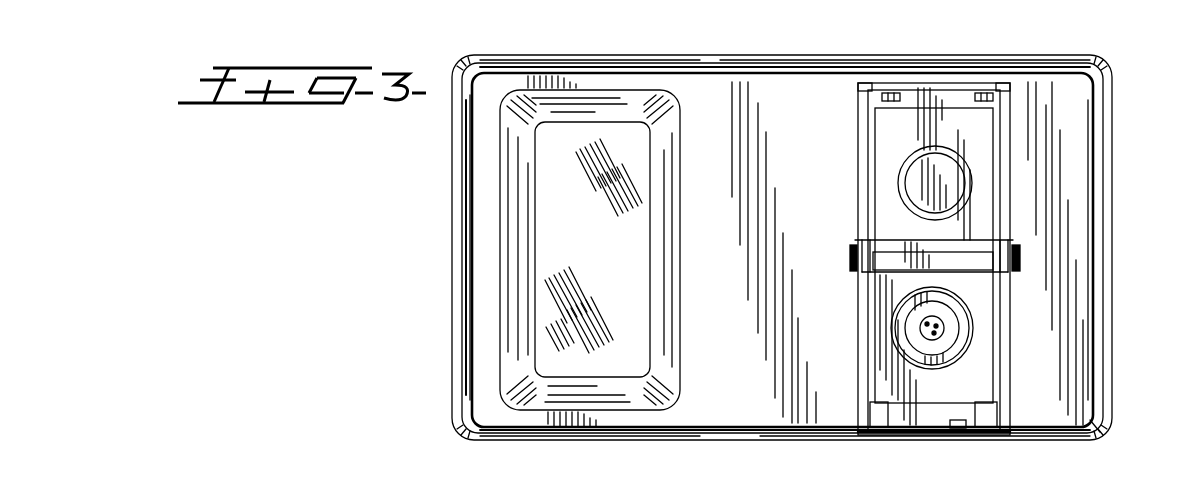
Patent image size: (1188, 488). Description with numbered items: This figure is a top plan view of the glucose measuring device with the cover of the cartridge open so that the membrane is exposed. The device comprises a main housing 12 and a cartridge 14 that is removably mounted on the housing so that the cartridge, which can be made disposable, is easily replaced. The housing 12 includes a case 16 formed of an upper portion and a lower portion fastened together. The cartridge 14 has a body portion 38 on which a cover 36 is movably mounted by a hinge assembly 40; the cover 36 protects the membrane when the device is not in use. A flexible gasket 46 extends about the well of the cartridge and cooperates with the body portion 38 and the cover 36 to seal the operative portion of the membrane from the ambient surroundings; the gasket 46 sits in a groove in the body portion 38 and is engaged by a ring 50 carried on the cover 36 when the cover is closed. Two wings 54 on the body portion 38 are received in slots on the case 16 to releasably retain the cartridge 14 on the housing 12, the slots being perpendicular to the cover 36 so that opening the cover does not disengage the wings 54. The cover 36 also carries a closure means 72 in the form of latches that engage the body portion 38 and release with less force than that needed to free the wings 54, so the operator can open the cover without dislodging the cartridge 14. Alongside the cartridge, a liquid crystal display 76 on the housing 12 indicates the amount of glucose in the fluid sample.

The main housing 12 is at (1112, 355).
The cartridge 14 is at (925, 433).
The case 16 is at (1098, 433).
The cover 36 is at (905, 125).
The body portion 38 is at (958, 405).
The hinge assembly 40 is at (1018, 260).
The flexible gasket 46 is at (953, 345).
The ring 50 is at (958, 172).
The wings 54 is at (862, 84).
The closure means 72 is at (891, 93).
The liquid crystal display 76 is at (545, 295).